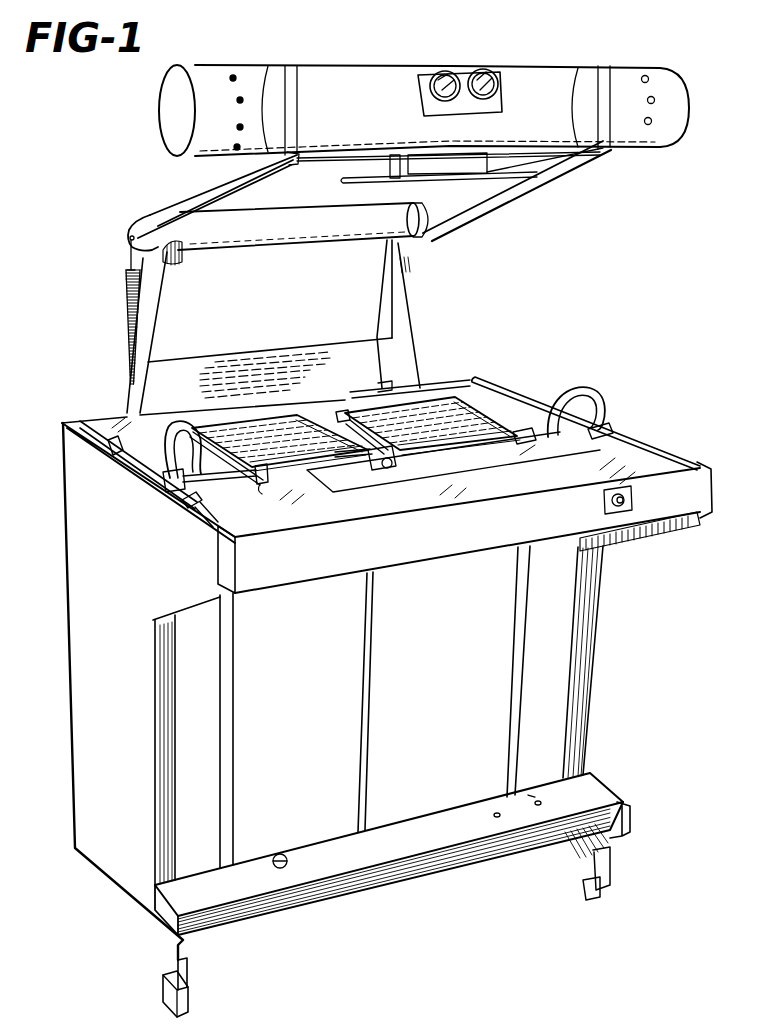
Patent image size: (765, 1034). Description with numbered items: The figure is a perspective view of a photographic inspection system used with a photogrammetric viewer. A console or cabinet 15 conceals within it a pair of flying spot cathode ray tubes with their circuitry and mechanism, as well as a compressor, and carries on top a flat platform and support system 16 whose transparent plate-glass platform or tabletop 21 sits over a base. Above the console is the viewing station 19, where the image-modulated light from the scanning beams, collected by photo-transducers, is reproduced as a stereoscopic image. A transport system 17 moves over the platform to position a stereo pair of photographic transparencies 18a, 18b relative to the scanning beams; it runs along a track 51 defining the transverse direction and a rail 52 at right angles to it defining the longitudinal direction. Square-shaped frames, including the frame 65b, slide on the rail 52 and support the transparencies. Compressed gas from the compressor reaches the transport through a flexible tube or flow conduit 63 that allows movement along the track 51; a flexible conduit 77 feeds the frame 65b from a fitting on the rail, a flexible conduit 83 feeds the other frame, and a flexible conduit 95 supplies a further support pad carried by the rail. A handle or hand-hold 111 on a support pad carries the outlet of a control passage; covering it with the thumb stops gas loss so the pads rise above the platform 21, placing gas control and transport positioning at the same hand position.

The console or cabinet 15 is at (66, 681).
The platform and support system 16 is at (617, 456).
The transport system 17 is at (523, 424).
The photographic transparency 18a is at (298, 422).
The photographic transparency 18b is at (443, 408).
The viewing station 19 is at (383, 66).
The platform or tabletop 21 is at (654, 456).
The track 51 is at (178, 506).
The rail 52 is at (200, 520).
The flexible tube or flow conduit 63 is at (80, 420).
The frame 65b is at (342, 418).
The flexible conduit 77 is at (577, 380).
The flexible conduit 83 is at (166, 424).
The flexible conduit 95 is at (600, 428).
The handle or hand-hold 111 is at (260, 490).